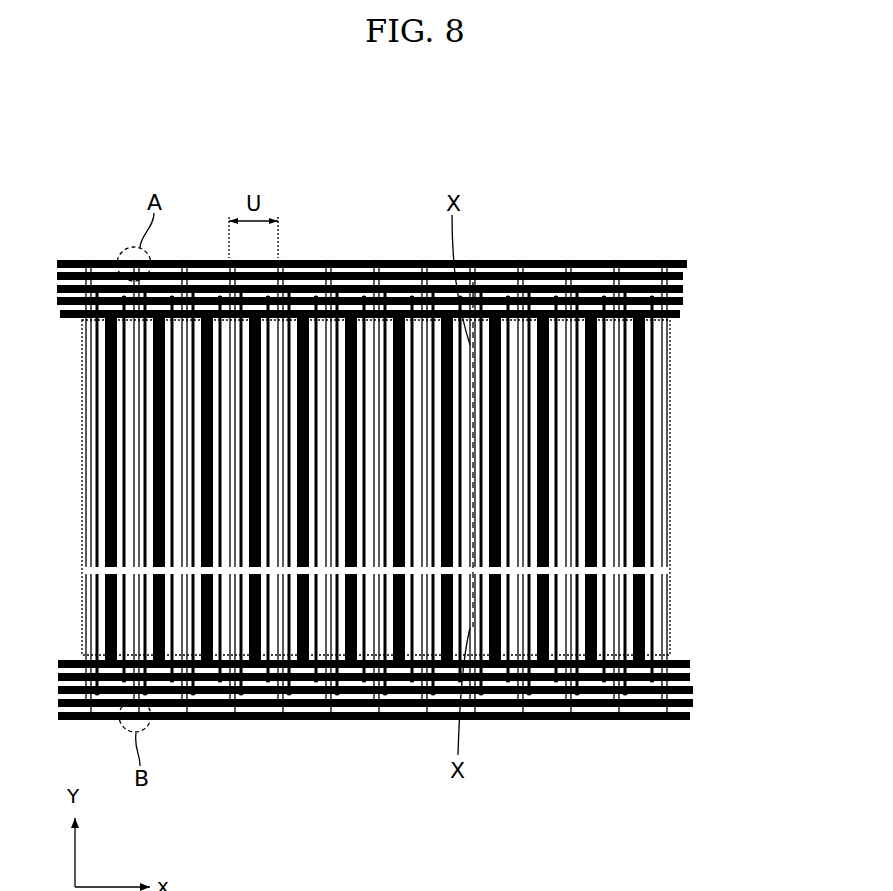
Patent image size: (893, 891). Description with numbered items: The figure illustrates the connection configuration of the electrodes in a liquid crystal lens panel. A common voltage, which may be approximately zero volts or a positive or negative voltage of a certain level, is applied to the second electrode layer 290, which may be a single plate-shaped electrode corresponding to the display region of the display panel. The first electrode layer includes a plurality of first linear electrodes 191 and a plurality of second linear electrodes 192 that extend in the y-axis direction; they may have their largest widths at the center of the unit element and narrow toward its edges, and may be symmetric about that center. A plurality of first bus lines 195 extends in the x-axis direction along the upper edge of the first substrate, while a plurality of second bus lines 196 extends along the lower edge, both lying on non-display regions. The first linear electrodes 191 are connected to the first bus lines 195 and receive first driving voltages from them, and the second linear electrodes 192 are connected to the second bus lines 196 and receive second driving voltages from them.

The first bus lines 195 is at (687, 264).
The second bus lines 196 is at (690, 664).
The first linear electrodes 191 is at (648, 414).
The second linear electrodes 192 is at (650, 612).
The second electrode layer 290 is at (670, 478).